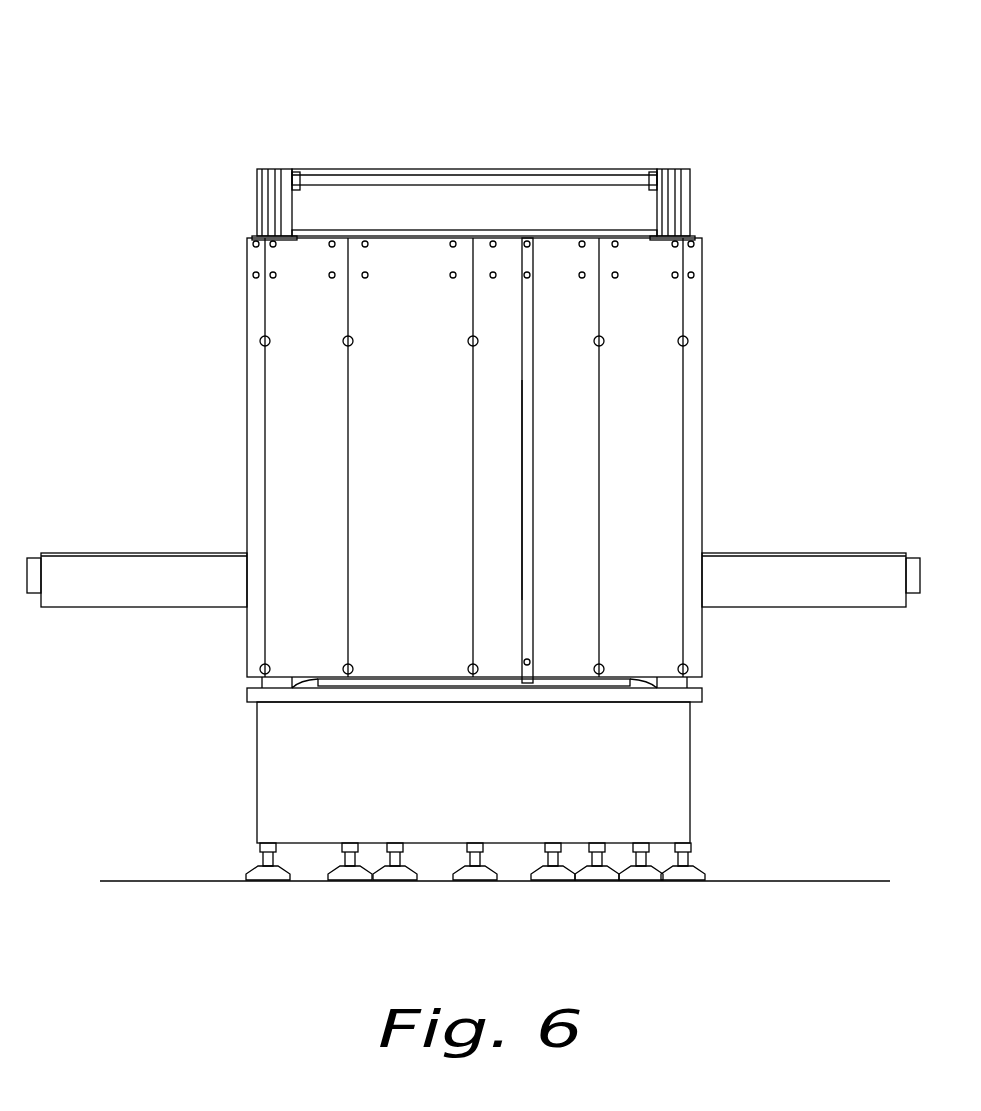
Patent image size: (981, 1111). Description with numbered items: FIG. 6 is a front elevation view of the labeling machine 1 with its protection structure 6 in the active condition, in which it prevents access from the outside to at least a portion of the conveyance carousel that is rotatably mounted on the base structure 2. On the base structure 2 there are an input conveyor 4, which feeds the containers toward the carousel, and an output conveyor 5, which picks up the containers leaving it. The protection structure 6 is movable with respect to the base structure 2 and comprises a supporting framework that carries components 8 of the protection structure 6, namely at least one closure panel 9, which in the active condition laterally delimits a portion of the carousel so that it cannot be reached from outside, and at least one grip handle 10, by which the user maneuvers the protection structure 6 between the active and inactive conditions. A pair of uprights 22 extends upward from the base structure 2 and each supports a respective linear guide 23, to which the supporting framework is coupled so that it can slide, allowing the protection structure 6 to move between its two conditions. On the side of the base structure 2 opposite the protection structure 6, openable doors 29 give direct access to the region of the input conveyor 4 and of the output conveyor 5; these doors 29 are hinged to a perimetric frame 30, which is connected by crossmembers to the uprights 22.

The labeling machine 1 is at (798, 130).
The base structure 2 is at (258, 771).
The input conveyor 4 is at (765, 502).
The output conveyor 5 is at (124, 500).
The protection structure 6 is at (235, 322).
The components 8 is at (545, 444).
The closure panel 9 is at (318, 257).
The grip handle 10 is at (528, 487).
The uprights 22 is at (262, 170).
The linear guide 23 is at (265, 215).
The openable doors 29 is at (422, 207).
The perimetric frame 30 is at (542, 168).